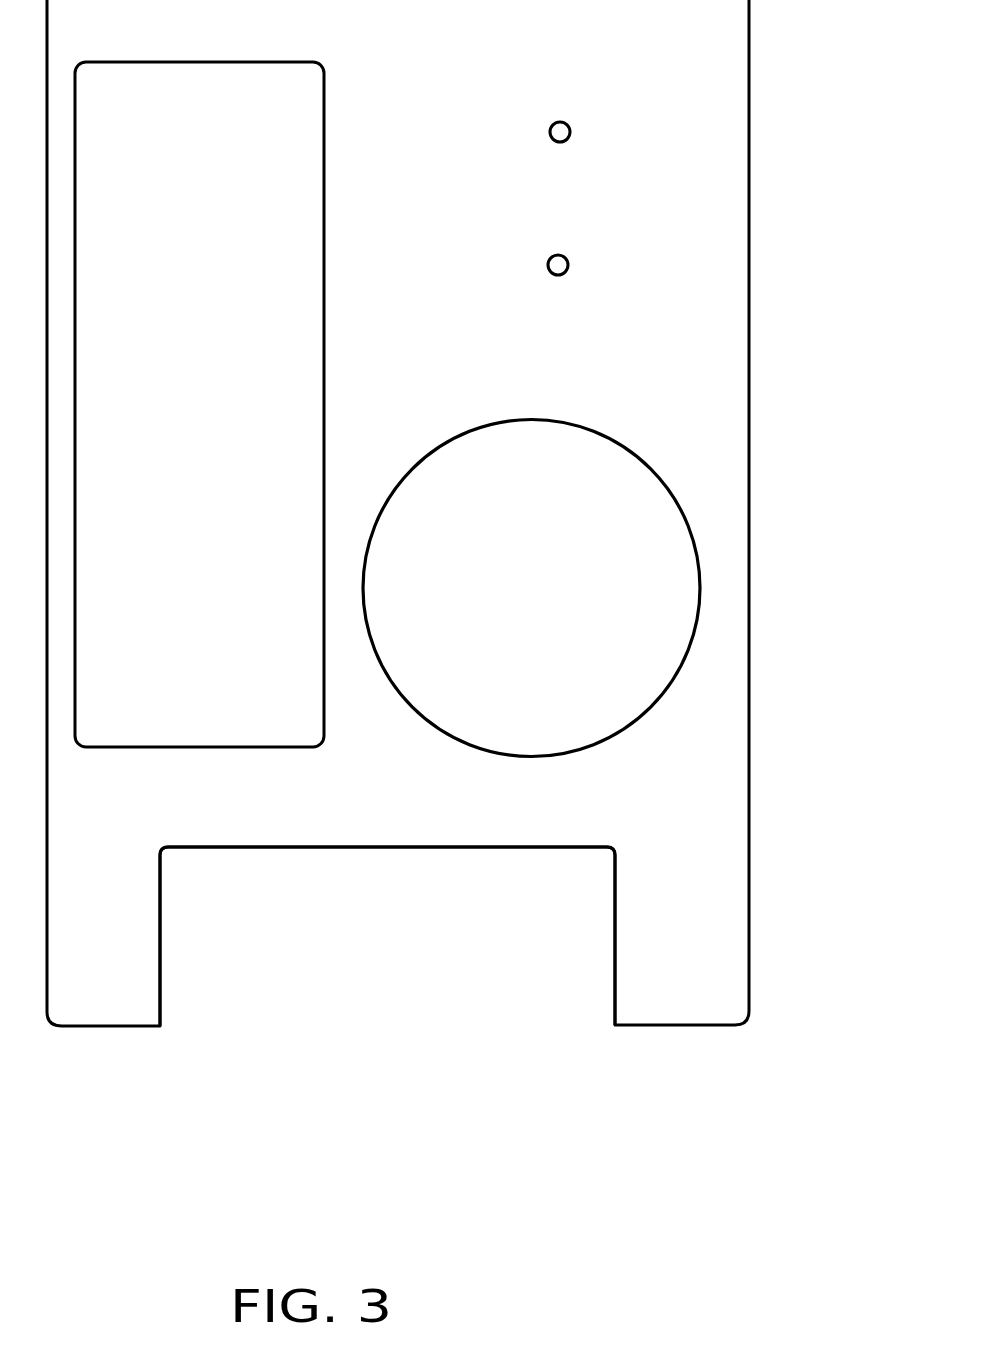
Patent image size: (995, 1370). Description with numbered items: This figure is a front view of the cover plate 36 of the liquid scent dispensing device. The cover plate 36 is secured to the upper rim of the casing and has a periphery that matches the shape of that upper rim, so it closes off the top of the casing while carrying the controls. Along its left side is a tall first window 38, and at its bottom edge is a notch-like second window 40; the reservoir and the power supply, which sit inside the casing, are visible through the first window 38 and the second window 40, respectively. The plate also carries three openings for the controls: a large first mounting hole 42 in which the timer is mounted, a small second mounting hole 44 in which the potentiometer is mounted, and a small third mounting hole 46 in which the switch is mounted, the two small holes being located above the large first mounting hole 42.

The cover plate 36 is at (732, 192).
The first window 38 is at (324, 214).
The second window 40 is at (615, 972).
The first mounting hole 42 is at (694, 549).
The second mounting hole 44 is at (563, 274).
The third mounting hole 46 is at (565, 141).